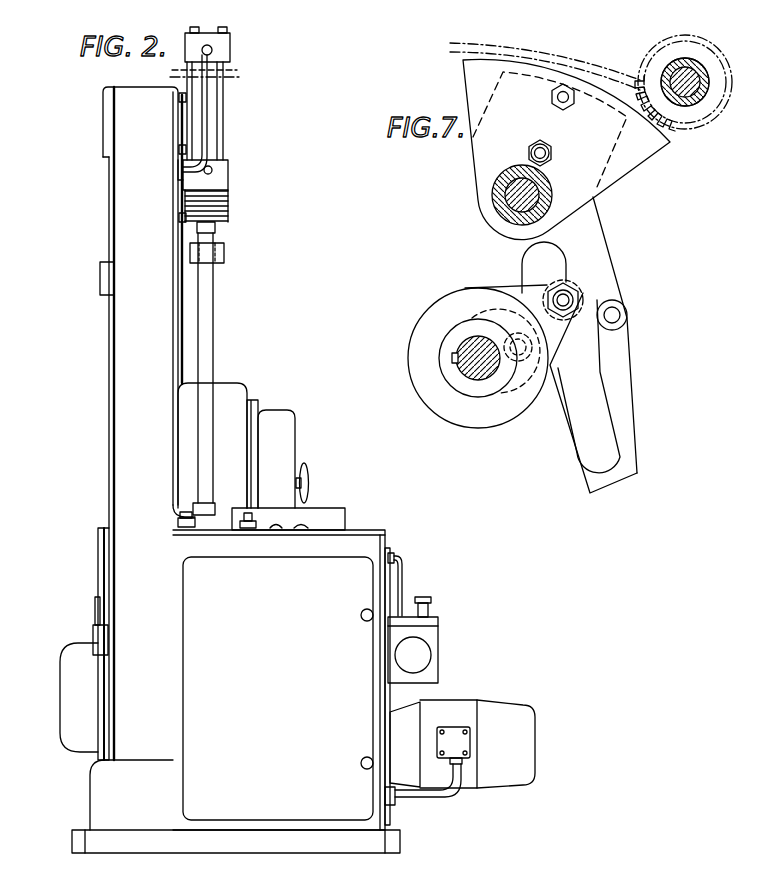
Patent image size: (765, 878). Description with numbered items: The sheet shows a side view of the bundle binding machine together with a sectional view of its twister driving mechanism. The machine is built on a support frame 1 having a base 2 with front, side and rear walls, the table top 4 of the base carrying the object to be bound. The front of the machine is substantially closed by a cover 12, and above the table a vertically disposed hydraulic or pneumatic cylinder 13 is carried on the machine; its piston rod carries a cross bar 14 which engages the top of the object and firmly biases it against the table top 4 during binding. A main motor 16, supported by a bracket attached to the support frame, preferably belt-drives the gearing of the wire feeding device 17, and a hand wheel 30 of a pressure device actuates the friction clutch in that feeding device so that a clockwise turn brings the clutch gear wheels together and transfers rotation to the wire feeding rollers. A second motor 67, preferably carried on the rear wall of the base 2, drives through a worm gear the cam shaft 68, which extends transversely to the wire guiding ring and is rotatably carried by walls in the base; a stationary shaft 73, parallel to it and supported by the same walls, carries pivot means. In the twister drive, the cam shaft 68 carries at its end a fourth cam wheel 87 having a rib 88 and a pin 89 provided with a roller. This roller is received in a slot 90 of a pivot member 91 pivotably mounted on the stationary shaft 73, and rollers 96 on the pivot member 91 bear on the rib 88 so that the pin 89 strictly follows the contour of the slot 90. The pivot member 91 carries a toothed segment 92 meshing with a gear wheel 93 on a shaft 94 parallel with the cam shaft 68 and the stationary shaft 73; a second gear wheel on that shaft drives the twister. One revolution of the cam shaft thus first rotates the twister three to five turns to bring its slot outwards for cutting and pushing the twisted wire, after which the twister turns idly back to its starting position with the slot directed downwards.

In FIG. 2, the support frame 1 is at (368, 542).
In FIG. 2, the base 2 is at (104, 776).
In FIG. 2, the table top 4 is at (217, 527).
In FIG. 2, the cover 12 is at (112, 315).
In FIG. 2, the hydraulic or pneumatic cylinder 13 is at (215, 143).
In FIG. 2, the cross bar 14 is at (224, 254).
In FIG. 2, the main motor 16 is at (68, 676).
In FIG. 2, the wire feeding device 17 is at (280, 409).
In FIG. 2, the hand wheel 30 is at (309, 492).
In FIG. 2, the second motor 67 is at (503, 718).
In FIG. 7, the cam shaft 68 is at (472, 374).
In FIG. 7, the stationary shaft 73 is at (498, 202).
In FIG. 7, the fourth cam wheel 87 is at (497, 414).
In FIG. 7, the rib 88 is at (472, 294).
In FIG. 7, the pin 89 is at (582, 290).
In FIG. 7, the slot 90 is at (601, 395).
In FIG. 7, the pivot member 91 is at (583, 234).
In FIG. 7, the toothed segment 92 is at (620, 166).
In FIG. 7, the gear wheel 93 is at (653, 47).
In FIG. 7, the shaft 94 is at (684, 100).
In FIG. 7, the rollers 96 is at (628, 315).